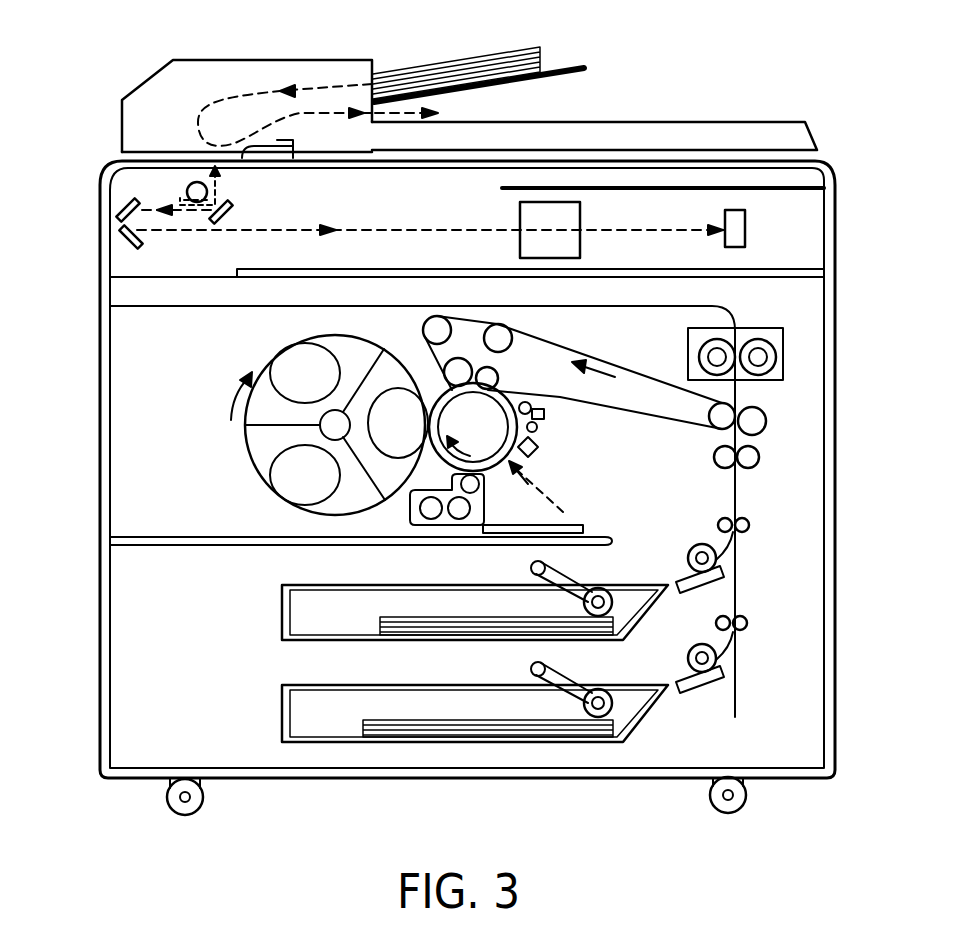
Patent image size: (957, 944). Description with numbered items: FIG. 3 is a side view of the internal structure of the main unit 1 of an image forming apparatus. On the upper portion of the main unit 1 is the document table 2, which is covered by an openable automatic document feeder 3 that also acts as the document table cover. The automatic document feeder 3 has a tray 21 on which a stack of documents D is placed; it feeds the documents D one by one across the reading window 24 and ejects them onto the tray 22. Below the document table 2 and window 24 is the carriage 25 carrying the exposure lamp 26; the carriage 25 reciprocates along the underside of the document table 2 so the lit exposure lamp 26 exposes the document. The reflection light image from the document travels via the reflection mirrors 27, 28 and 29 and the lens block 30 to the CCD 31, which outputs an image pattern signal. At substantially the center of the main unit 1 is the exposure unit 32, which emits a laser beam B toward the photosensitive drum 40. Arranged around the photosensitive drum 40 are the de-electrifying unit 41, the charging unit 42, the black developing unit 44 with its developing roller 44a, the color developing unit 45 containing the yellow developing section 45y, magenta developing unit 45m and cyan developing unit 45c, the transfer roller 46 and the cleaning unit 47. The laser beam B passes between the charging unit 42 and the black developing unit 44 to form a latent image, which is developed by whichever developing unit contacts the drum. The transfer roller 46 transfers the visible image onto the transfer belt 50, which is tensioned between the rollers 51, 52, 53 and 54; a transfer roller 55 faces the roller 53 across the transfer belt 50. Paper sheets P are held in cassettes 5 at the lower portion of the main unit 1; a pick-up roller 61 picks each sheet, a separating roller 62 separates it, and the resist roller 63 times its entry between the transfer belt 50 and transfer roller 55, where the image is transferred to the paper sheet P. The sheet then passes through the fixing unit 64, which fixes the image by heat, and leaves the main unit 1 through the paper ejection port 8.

The main unit 1 is at (836, 213).
The document table 2 is at (488, 166).
The automatic document feeder 3 is at (270, 60).
The cassettes 5 is at (280, 612).
The paper ejection port 8 is at (100, 303).
The tray 21 is at (580, 68).
The tray 22 is at (688, 122).
The window 24 is at (219, 170).
The carriage 25 is at (199, 203).
The exposure lamp 26 is at (187, 186).
The reflection mirror 27 is at (232, 212).
The reflection mirror 28 is at (118, 205).
The reflection mirror 29 is at (122, 240).
The lens block 30 is at (582, 216).
The CCD 31 is at (747, 232).
The exposure unit 32 is at (586, 527).
The photosensitive drum 40 is at (515, 488).
The de-electrifying unit 41 is at (540, 432).
The charging unit 42 is at (540, 452).
The black developing unit 44 is at (448, 527).
The developing roller 44a is at (478, 492).
The color developing unit 45 is at (311, 427).
The magenta developing unit 45m is at (285, 362).
The yellow developing section 45y is at (400, 395).
The cyan developing unit 45c is at (280, 488).
The transfer roller 46 is at (500, 379).
The cleaning unit 47 is at (546, 414).
The transfer belt 50 is at (622, 414).
The roller 51 is at (448, 320).
The roller 52 is at (473, 427).
The roller 53 is at (708, 412).
The roller 54 is at (513, 340).
The transfer roller 55 is at (767, 421).
The pick-up roller 61 is at (628, 584).
The separating roller 62 is at (700, 546).
The resist roller 63 is at (713, 457).
The fixing unit 64 is at (766, 328).
The laser beam B is at (566, 508).
The documents D is at (462, 68).
The paper sheets P is at (415, 616).